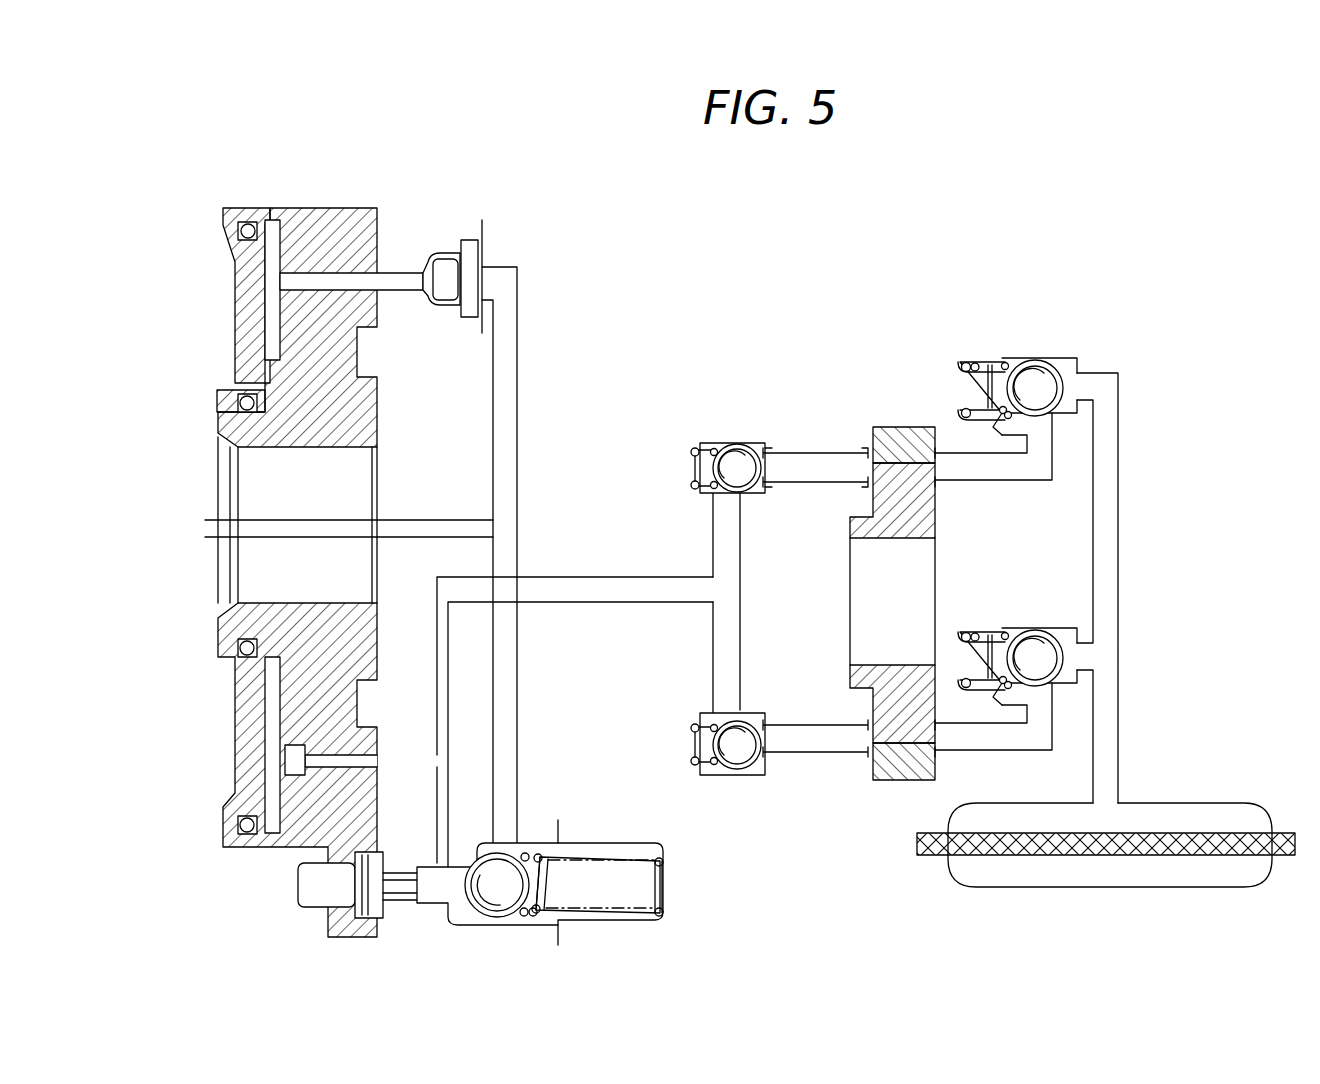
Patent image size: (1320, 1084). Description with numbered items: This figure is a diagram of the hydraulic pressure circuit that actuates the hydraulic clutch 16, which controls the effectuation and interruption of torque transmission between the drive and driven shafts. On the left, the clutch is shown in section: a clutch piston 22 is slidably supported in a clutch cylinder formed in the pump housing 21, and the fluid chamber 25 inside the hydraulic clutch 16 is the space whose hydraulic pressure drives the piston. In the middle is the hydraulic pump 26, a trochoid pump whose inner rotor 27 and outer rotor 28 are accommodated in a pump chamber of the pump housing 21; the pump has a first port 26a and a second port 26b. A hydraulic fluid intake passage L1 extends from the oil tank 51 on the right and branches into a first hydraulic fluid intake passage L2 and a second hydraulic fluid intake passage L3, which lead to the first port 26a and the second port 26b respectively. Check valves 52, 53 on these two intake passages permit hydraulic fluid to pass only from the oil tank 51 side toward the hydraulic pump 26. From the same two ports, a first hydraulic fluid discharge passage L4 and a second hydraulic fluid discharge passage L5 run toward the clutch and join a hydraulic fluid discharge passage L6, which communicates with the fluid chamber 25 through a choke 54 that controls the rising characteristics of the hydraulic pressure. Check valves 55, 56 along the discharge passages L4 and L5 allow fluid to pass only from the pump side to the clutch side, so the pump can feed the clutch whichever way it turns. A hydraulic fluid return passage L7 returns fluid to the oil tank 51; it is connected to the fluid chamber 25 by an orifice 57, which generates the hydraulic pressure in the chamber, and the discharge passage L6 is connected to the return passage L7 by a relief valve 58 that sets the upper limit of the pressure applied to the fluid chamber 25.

The hydraulic clutch 16 is at (230, 745).
The pump housing 21 is at (334, 373).
The clutch piston 22 is at (243, 287).
The fluid chamber 25 is at (272, 250).
The hydraulic pump 26 is at (878, 596).
The first port 26a is at (876, 745).
The second port 26b is at (866, 470).
The inner rotor 27 is at (916, 493).
The outer rotor 28 is at (900, 440).
The oil tank 51 is at (1195, 810).
The check valve 52 is at (1034, 655).
The check valve 53 is at (1034, 385).
The choke 54 is at (326, 760).
The check valve 55 is at (737, 762).
The check valve 56 is at (735, 465).
The orifice 57 is at (447, 265).
The relief valve 58 is at (500, 863).
The hydraulic fluid intake passage L1 is at (1118, 678).
The first hydraulic fluid intake passage L2 is at (965, 742).
The second hydraulic fluid intake passage L3 is at (1003, 485).
The first hydraulic fluid discharge passage L4 is at (800, 755).
The second hydraulic fluid discharge passage L5 is at (806, 470).
The hydraulic fluid discharge passage L6 is at (652, 594).
The hydraulic fluid return passage L7 is at (515, 678).